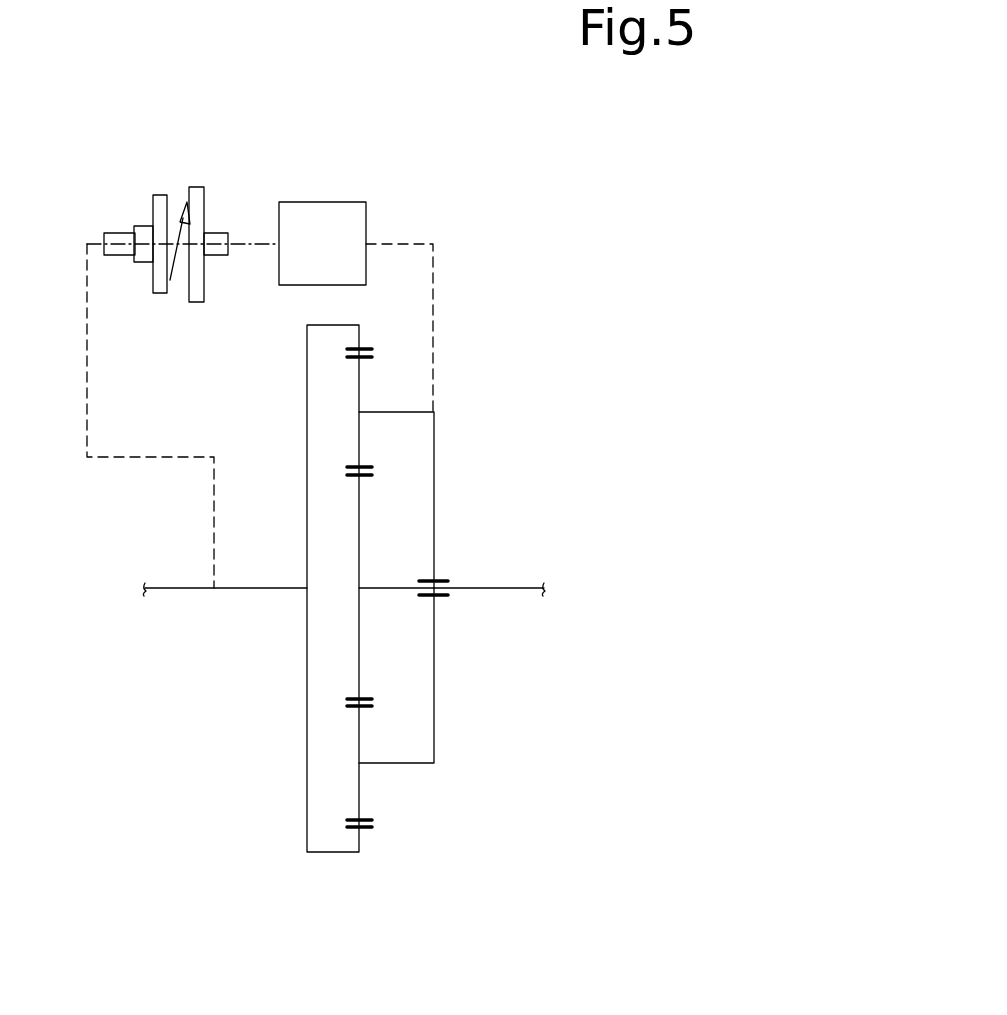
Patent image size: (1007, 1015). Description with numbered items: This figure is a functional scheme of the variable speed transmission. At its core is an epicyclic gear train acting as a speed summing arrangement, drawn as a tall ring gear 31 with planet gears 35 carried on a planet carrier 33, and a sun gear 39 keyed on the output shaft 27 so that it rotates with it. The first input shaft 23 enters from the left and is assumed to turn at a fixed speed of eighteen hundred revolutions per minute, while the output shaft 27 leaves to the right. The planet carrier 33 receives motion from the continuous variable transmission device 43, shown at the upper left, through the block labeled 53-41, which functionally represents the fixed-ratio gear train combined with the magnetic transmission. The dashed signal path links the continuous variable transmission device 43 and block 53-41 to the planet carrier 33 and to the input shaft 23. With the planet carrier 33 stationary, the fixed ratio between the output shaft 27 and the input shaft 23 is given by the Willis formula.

The continuous variable transmission device 43 is at (108, 198).
The gear train block 53-41 is at (372, 196).
The ring gear 31 is at (307, 412).
The planet gears 35 is at (359, 384).
The planet carrier 33 is at (434, 463).
The sun gear 39 is at (359, 558).
The output shaft 27 is at (518, 588).
The first input shaft 23 is at (253, 588).